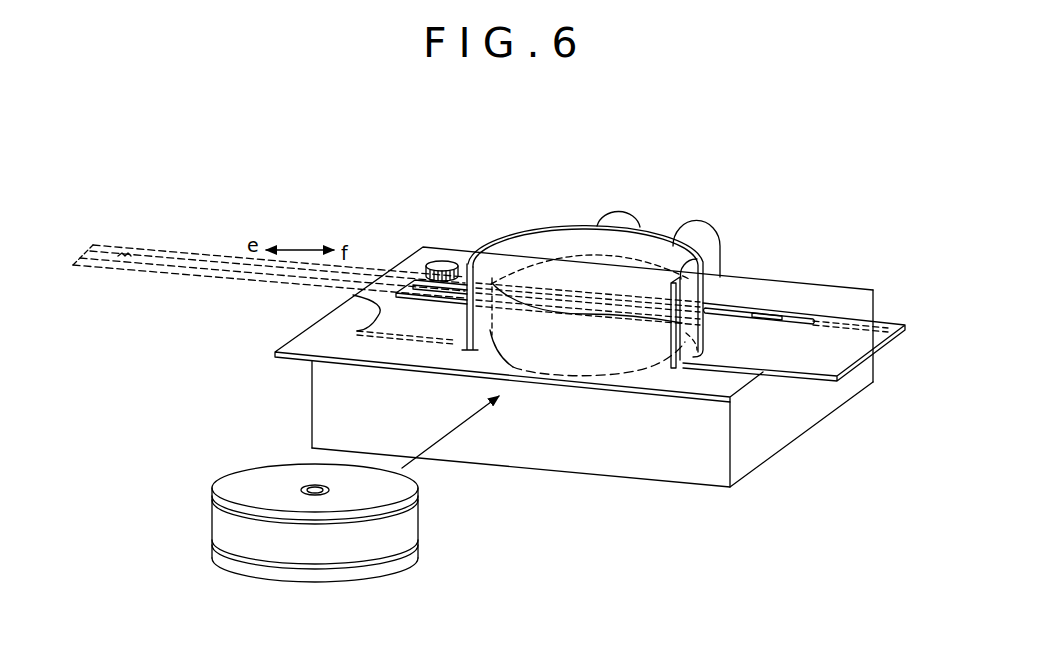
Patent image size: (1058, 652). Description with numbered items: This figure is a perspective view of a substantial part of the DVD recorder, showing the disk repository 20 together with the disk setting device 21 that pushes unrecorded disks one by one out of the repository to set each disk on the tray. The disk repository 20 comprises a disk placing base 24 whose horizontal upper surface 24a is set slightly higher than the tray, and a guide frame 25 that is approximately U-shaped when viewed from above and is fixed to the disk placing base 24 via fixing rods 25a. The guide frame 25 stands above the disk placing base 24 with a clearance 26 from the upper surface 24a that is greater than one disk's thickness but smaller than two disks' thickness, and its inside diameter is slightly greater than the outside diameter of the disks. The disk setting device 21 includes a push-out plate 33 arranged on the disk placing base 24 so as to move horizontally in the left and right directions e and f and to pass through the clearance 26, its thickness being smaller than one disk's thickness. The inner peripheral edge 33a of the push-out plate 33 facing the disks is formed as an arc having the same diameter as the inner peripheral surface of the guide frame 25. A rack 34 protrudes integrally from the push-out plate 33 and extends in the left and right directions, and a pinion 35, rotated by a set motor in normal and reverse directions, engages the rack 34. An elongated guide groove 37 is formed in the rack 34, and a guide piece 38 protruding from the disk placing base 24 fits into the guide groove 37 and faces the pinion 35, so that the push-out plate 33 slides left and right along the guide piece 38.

The disk repository 20 is at (692, 494).
The disk setting device 21 is at (887, 318).
The disk placing base 24 is at (620, 466).
The upper surface 24a is at (328, 347).
The guide frame 25 is at (530, 229).
The fixing rods 25a is at (698, 218).
The clearance 26 is at (684, 373).
The push-out plate 33 is at (823, 354).
The inner peripheral edge 33a is at (667, 353).
The rack 34 is at (781, 310).
The pinion 35 is at (441, 261).
The guide groove 37 is at (757, 317).
The guide piece 38 is at (410, 299).